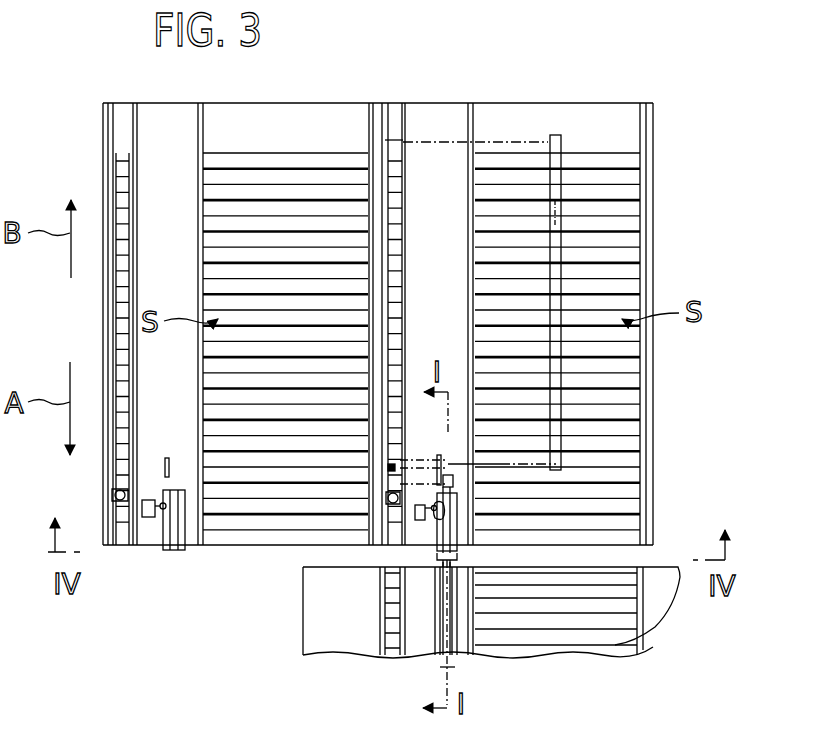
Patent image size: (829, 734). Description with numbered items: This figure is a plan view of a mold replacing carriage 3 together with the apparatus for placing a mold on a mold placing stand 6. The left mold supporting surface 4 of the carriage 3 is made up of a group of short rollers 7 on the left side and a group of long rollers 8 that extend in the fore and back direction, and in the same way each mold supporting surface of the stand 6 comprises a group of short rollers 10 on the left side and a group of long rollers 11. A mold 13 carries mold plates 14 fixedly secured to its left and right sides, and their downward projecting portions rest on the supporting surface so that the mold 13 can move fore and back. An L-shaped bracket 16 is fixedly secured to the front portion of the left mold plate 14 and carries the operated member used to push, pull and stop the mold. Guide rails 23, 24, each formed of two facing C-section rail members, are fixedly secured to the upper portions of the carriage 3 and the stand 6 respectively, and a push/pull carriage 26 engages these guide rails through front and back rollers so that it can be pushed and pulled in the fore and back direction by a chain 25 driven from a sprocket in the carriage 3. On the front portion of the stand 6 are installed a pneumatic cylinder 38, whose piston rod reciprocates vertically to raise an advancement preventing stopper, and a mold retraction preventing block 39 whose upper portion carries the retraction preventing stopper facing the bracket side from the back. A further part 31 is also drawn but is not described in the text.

The carriage 3 is at (299, 624).
The left mold supporting surface 4 is at (603, 644).
The stand 6 is at (100, 304).
The short rollers 7 is at (392, 656).
The long rollers 8 is at (560, 640).
The short rollers 10 is at (122, 155).
The long rollers 11 is at (248, 157).
The mold 13 is at (483, 142).
The mold plates 14 is at (388, 140).
The L-shaped bracket 16 is at (388, 466).
The guide rail 23 is at (437, 633).
The guide rail 24 is at (440, 548).
The chain 25 is at (478, 645).
The push/pull carriage 26 is at (457, 523).
The switch box 31 is at (452, 507).
The pneumatic cylinder 38 is at (386, 498).
The mold retraction preventing block 39 is at (439, 455).